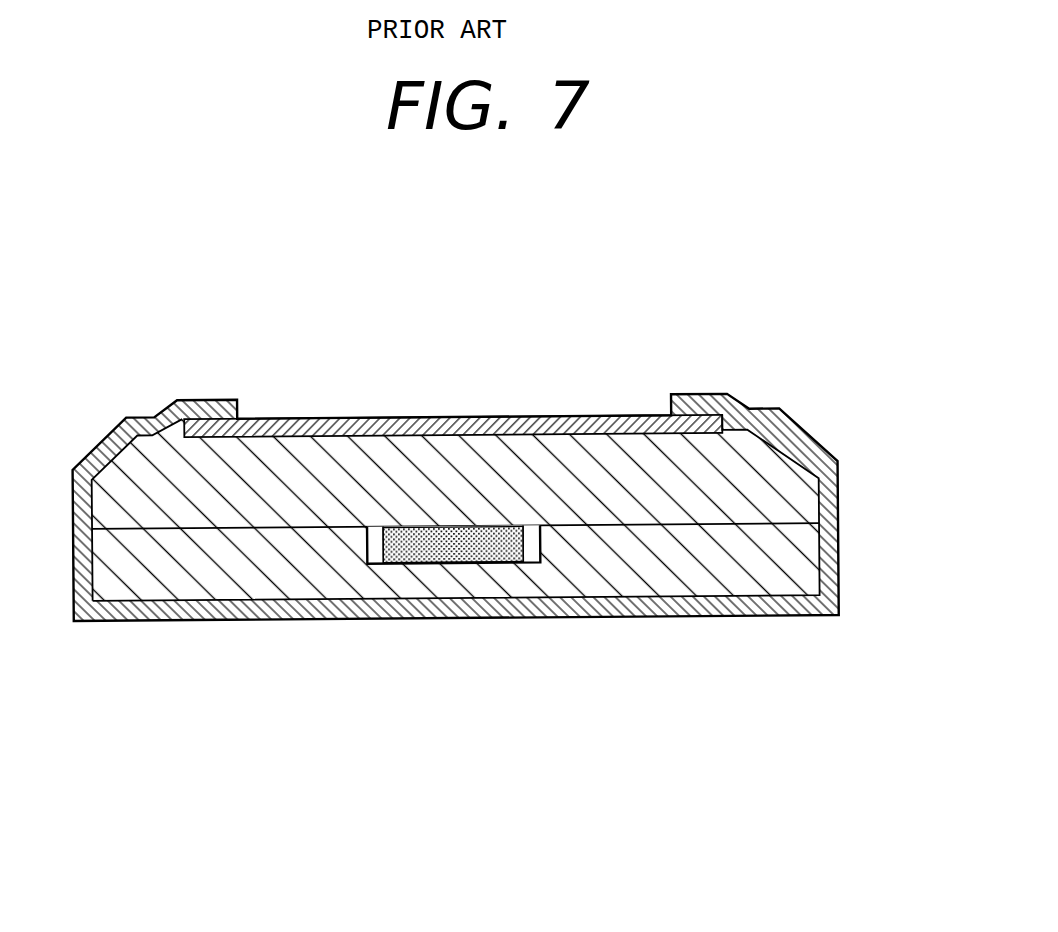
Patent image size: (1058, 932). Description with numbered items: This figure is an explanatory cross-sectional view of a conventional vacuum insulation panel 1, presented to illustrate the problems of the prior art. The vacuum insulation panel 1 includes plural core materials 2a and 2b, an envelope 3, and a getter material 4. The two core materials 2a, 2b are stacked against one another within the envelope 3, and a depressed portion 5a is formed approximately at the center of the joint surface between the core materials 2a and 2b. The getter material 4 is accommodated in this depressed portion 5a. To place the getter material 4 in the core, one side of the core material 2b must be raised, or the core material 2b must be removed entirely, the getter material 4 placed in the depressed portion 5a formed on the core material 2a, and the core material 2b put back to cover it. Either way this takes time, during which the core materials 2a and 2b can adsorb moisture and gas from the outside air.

The vacuum insulation panel 1 is at (589, 389).
The core material 2a is at (688, 572).
The core material 2b is at (764, 465).
The envelope 3 is at (209, 398).
The getter material 4 is at (469, 557).
The depressed portion 5a is at (370, 556).